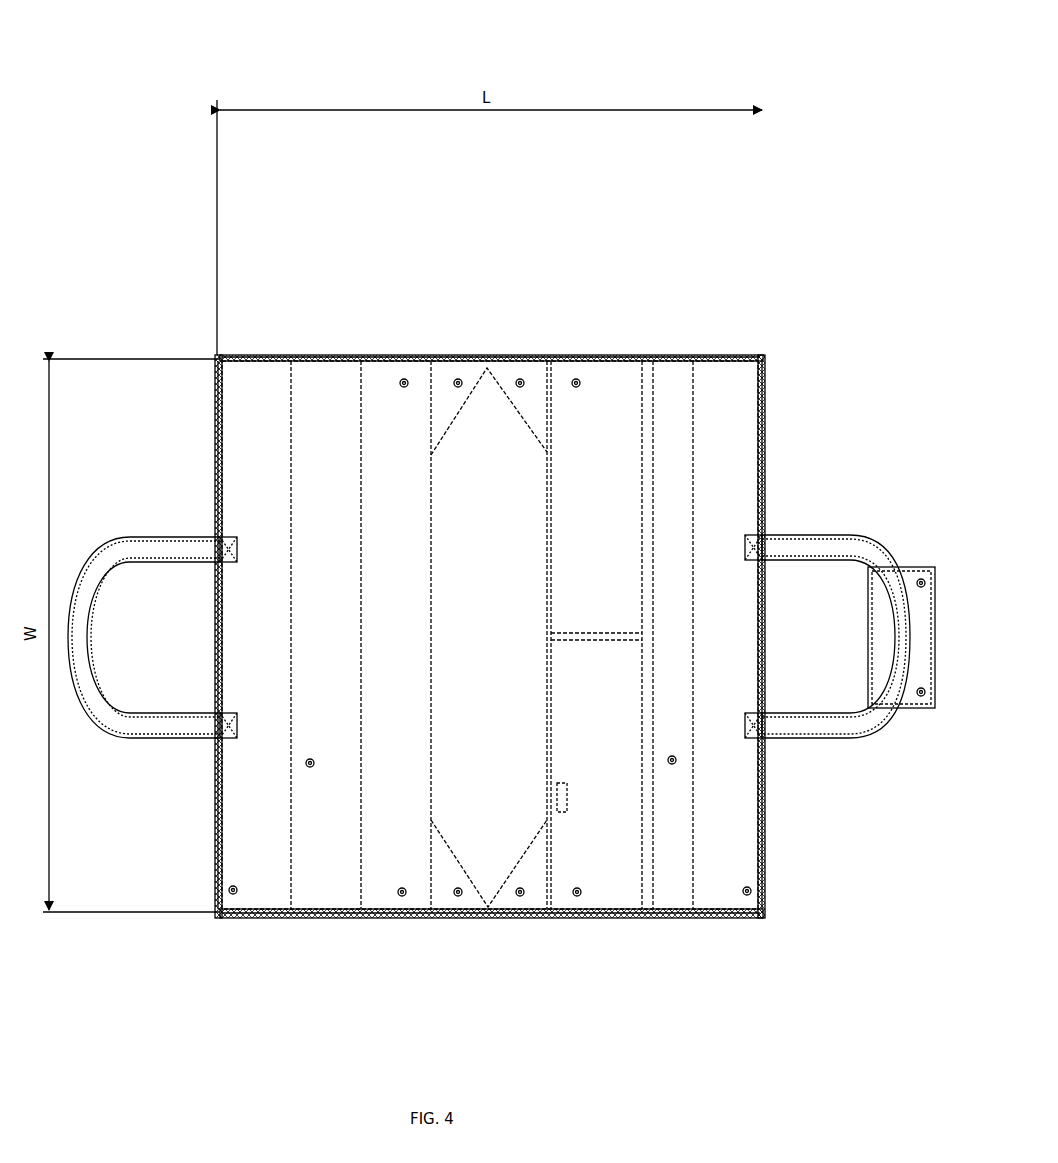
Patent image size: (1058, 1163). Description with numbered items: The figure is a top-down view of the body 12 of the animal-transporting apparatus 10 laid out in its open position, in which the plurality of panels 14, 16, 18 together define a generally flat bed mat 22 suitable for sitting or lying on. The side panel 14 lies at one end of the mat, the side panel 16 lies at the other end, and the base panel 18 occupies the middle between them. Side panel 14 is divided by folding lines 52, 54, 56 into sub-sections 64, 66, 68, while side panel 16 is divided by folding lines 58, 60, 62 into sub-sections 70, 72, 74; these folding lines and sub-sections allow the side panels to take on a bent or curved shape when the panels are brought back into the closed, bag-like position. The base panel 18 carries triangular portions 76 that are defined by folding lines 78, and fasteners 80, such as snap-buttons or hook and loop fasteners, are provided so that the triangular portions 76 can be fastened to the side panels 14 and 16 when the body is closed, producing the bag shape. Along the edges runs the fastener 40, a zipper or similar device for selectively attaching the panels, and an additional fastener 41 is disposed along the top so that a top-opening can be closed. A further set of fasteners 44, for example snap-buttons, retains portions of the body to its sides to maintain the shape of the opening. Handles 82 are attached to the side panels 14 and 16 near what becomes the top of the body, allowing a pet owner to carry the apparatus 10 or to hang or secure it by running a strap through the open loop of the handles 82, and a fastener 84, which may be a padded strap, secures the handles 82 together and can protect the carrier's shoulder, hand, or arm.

The apparatus 10 is at (126, 175).
The body 12 is at (808, 252).
The side panel 14 is at (653, 270).
The side panel 16 is at (326, 288).
The base panel 18 is at (494, 277).
The bed mat 22 is at (818, 128).
The fastener 40 is at (282, 352).
The additional fastener 41 is at (215, 452).
The fasteners 44 is at (313, 759).
The folding line 52 is at (692, 501).
The folding line 54 is at (640, 535).
The folding line 56 is at (549, 545).
The folding line 58 is at (431, 546).
The folding line 60 is at (362, 560).
The folding line 62 is at (300, 545).
The sub-section 64 is at (726, 635).
The sub-section 66 is at (673, 635).
The sub-section 68 is at (596, 703).
The sub-section 70 is at (396, 635).
The sub-section 72 is at (326, 635).
The sub-section 74 is at (256, 635).
The triangular portion 76 is at (490, 447).
The folding line 78 is at (528, 421).
The fasteners 80 is at (457, 378).
The handle 82 is at (152, 538).
The fastener 84 is at (918, 636).